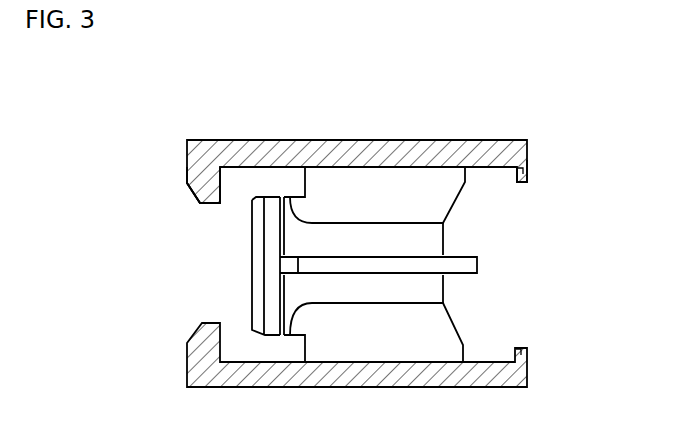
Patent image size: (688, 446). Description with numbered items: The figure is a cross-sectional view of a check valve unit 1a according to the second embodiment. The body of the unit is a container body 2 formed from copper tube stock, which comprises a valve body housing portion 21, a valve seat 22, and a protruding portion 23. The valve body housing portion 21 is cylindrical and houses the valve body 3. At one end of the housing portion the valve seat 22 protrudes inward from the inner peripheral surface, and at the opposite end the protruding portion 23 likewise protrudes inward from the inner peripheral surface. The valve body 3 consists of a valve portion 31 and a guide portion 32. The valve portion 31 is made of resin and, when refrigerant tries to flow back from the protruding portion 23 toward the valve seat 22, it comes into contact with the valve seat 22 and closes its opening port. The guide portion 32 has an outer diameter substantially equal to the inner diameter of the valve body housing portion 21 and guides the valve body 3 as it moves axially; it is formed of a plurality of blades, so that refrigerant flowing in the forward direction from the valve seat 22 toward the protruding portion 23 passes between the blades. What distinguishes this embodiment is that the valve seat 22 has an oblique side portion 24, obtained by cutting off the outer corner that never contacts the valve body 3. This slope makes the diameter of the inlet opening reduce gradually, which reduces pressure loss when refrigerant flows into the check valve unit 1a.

The check valve unit 1a is at (572, 173).
The container body 2 is at (423, 152).
The valve body housing portion 21 is at (367, 150).
The valve seat 22 is at (223, 188).
The protruding portion 23 is at (529, 163).
The oblique side portion 24 is at (191, 191).
The valve body 3 is at (372, 288).
The valve portion 31 is at (255, 283).
The guide portion 32 is at (412, 352).